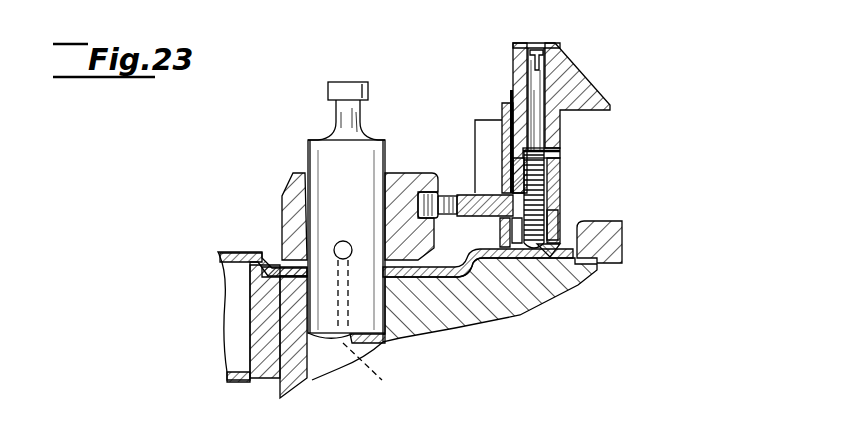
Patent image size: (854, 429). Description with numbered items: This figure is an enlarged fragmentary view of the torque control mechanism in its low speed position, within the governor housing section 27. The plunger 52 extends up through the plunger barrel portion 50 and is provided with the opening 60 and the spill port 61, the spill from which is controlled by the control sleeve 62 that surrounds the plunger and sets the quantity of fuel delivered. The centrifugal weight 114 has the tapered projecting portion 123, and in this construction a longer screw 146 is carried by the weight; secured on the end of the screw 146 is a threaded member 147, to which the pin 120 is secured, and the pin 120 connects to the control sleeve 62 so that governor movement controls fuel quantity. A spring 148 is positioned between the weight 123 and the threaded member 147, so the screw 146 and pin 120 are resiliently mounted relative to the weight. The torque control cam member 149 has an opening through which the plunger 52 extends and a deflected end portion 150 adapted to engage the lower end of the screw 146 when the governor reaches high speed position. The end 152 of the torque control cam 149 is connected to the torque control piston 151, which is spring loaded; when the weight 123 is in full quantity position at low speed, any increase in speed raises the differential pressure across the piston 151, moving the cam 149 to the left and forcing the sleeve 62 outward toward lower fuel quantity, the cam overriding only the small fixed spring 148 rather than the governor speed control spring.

The governor housing section 27 is at (601, 222).
The plunger barrel portion 50 is at (297, 372).
The plunger 52 is at (374, 152).
The opening 60 is at (374, 370).
The spill port 61 is at (343, 240).
The control sleeve 62 is at (403, 173).
The centrifugal weight 114 is at (515, 52).
The pin 120 is at (452, 190).
The tapered projecting portion 123 is at (588, 95).
The screw 146 is at (543, 72).
The threaded member 147 is at (558, 225).
The spring 148 is at (557, 155).
The torque control cam member 149 is at (466, 253).
The deflected end portion 150 is at (550, 248).
The torque control piston 151 is at (233, 254).
The end of torque control cam 152 is at (277, 265).